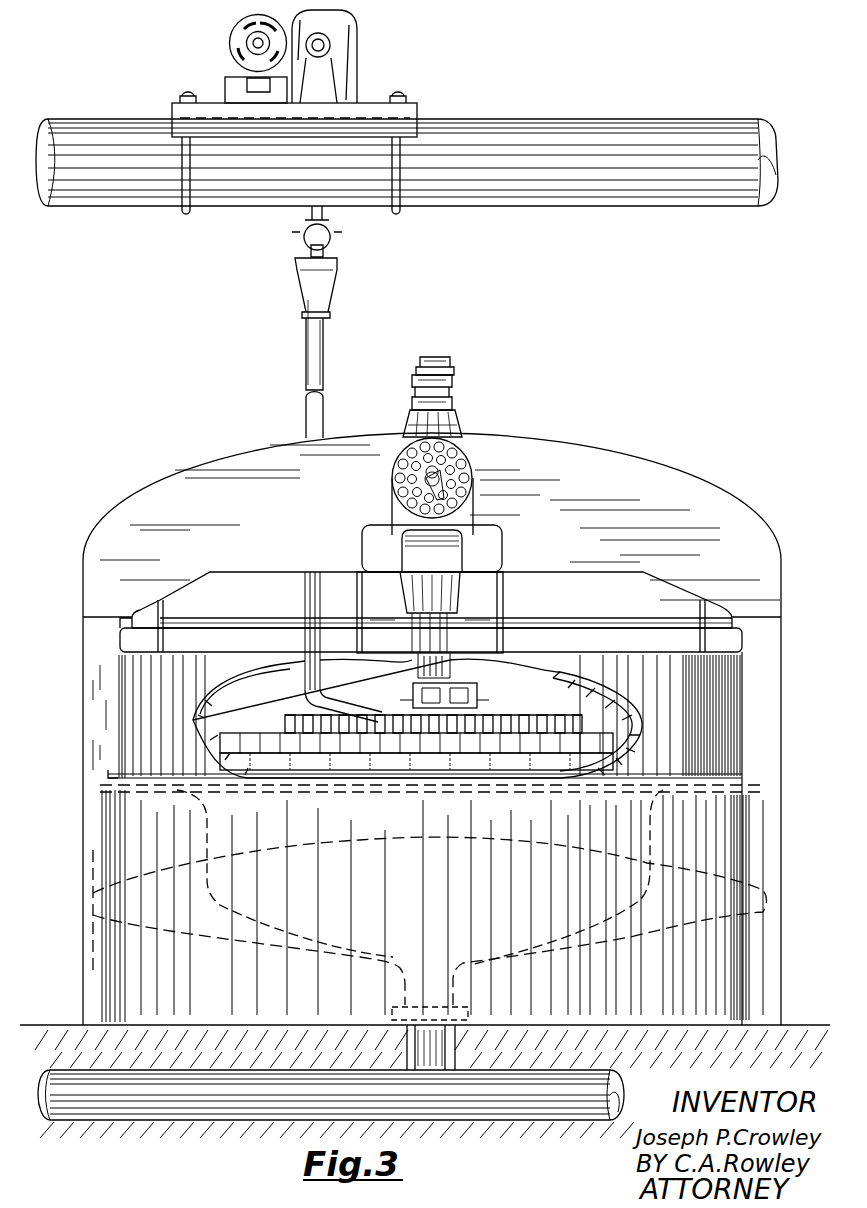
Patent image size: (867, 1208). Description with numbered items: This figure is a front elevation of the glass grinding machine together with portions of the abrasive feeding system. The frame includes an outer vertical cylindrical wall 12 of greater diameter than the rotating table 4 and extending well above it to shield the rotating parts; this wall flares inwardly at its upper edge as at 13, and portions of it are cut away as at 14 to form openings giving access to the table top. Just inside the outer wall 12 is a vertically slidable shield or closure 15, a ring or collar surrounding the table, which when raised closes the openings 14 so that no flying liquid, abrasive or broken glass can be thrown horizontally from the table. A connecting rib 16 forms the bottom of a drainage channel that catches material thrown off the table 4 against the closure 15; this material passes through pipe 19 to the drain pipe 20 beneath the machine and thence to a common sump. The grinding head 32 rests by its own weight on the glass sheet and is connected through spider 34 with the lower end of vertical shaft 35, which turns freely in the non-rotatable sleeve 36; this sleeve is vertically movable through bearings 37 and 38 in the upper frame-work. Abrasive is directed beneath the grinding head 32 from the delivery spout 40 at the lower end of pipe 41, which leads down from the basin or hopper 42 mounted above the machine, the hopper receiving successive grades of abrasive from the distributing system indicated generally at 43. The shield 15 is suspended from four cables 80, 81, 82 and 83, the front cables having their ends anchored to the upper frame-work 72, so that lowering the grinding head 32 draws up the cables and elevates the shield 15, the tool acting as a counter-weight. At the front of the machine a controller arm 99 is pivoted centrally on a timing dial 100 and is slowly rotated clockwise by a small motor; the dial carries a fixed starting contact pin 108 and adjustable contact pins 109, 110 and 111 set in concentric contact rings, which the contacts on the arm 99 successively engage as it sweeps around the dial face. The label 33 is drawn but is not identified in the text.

The table 4 is at (297, 753).
The outer vertical cylindrical wall 12 is at (770, 723).
The inwardly flaring upper edge 13 is at (268, 625).
The openings 14 is at (145, 637).
The vertically slidable shield or closure 15 is at (670, 685).
The connecting rib 16 is at (430, 902).
The pipe 19 is at (456, 1045).
The drain pipe 20 is at (530, 1092).
The grinding head 32 is at (493, 716).
The filter bag wall 33 is at (578, 723).
The spider 34 is at (444, 697).
The vertical shaft 35 is at (434, 359).
The non-rotatable sleeve 36 is at (418, 666).
The bearing 37 is at (503, 592).
The bearing 38 is at (450, 408).
The delivery spout 40 is at (316, 707).
The pipe 41 is at (306, 421).
The basin or hopper 42 is at (308, 288).
The abrasive distributing system 43 is at (322, 150).
The upper frame-work 72 is at (357, 593).
The supporting cable 80 is at (162, 610).
The supporting cable 81 is at (700, 612).
The cable 82 is at (362, 644).
The cable 83 is at (542, 628).
The controller arm 99 is at (456, 466).
The timing dial 100 is at (460, 433).
The contact pin 108 is at (412, 432).
The adjustable contact pin 109 is at (410, 492).
The adjustable contact pin 110 is at (470, 479).
The adjustable contact pin 111 is at (477, 491).